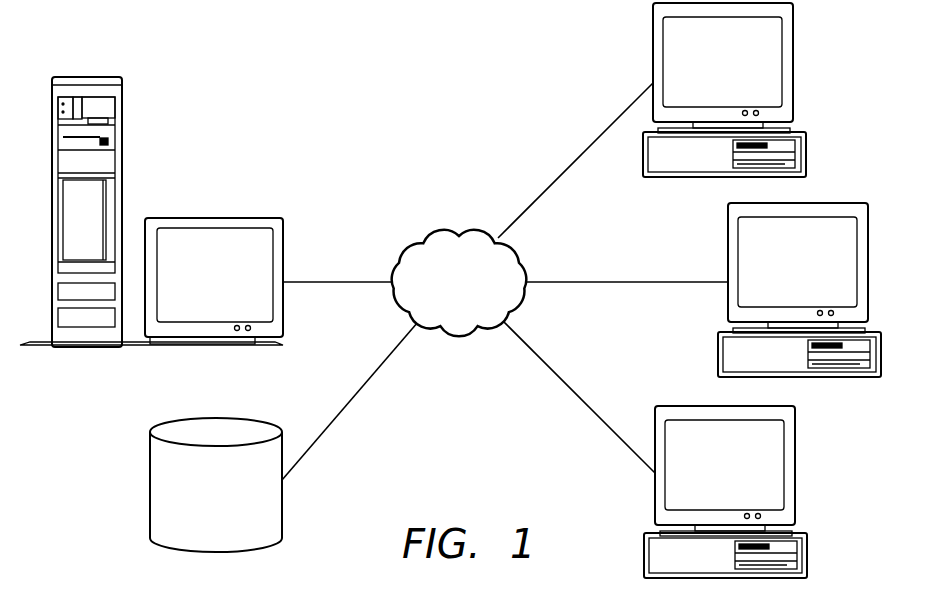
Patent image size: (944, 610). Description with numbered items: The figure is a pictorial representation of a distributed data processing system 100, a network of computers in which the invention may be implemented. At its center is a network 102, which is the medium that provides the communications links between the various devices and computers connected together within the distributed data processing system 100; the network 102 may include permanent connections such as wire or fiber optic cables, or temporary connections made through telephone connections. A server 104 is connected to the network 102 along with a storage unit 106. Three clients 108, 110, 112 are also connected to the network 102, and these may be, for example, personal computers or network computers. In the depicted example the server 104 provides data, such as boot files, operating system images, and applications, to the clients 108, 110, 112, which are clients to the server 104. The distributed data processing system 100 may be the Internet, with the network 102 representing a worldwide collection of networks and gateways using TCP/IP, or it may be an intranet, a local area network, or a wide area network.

The distributed data processing system 100 is at (282, 77).
The network 102 is at (478, 295).
The server 104 is at (234, 283).
The storage unit 106 is at (236, 506).
The client 108 is at (744, 75).
The client 110 is at (818, 274).
The client 112 is at (745, 474).